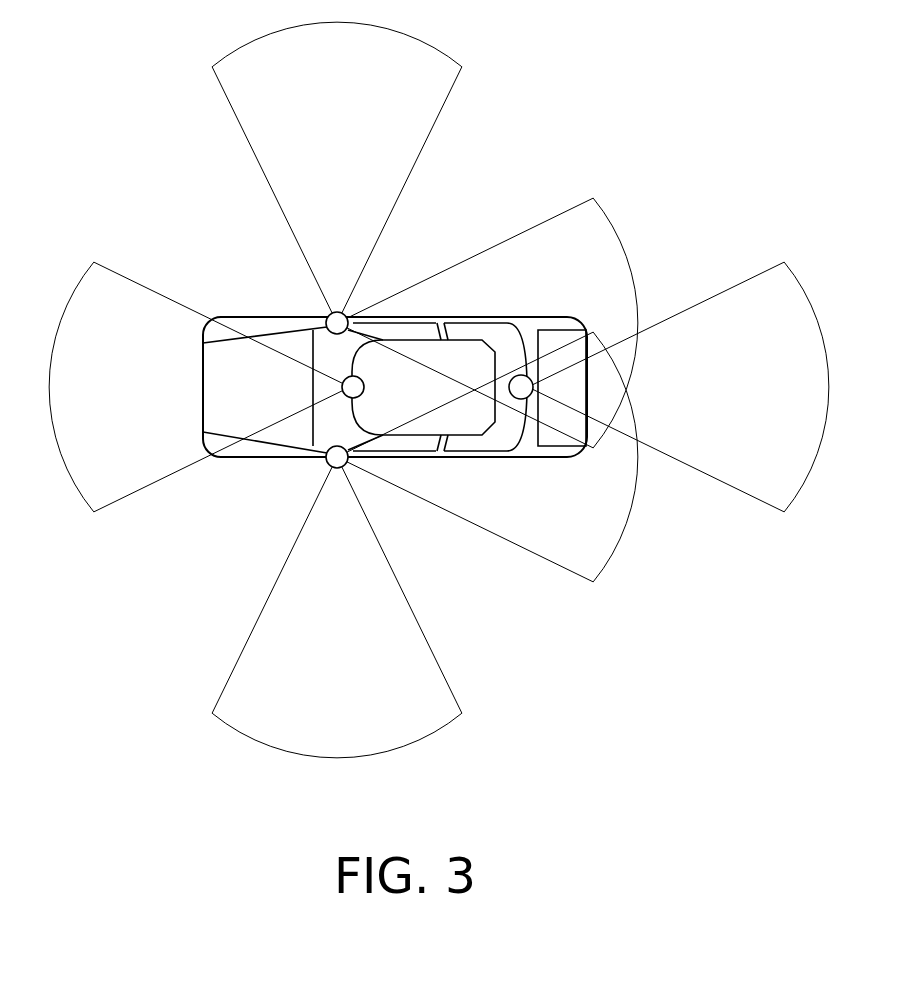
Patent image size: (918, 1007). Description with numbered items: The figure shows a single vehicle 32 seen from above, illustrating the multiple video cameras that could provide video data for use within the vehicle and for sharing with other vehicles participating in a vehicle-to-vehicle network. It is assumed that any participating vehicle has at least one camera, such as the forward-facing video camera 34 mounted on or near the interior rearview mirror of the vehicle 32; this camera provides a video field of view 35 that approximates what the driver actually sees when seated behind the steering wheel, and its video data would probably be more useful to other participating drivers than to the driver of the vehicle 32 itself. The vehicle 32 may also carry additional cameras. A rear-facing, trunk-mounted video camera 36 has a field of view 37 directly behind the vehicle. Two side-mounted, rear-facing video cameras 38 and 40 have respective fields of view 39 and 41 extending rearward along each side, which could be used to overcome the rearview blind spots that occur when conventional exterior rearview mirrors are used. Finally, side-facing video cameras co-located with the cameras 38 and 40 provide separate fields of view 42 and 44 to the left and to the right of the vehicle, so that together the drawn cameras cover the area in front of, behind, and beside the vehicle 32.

The vehicle 32 is at (217, 318).
The forward-facing video camera 34 is at (366, 387).
The video field of view 35 is at (61, 406).
The rear-facing, trunk-mounted video camera 36 is at (531, 380).
The field of view 37 is at (780, 402).
The side-mounted, rear-facing video camera 38 is at (331, 466).
The field of view 39 is at (593, 481).
The side-mounted, rear-facing video camera 40 is at (350, 316).
The field of view 41 is at (586, 304).
The field of view 42 is at (323, 737).
The field of view 44 is at (323, 64).